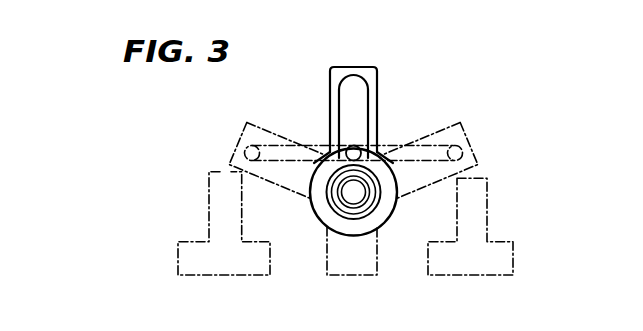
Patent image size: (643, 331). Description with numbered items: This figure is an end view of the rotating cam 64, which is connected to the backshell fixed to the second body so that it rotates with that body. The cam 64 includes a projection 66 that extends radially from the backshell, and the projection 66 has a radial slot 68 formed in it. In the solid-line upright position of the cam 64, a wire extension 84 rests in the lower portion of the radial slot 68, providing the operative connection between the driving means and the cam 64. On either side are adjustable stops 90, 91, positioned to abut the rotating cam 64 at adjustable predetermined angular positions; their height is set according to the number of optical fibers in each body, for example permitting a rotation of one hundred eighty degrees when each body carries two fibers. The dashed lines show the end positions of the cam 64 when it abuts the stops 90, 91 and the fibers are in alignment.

The cam 64 is at (395, 106).
The projection 66 is at (330, 80).
The radial slot 68 is at (354, 98).
The wire extension 84 is at (380, 148).
The adjustable stop 90 is at (488, 190).
The adjustable stop 91 is at (208, 193).